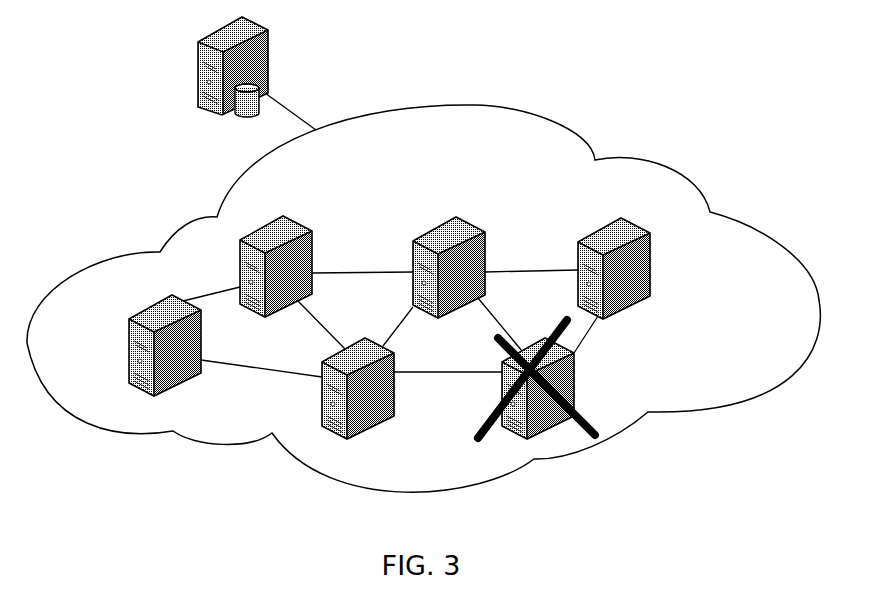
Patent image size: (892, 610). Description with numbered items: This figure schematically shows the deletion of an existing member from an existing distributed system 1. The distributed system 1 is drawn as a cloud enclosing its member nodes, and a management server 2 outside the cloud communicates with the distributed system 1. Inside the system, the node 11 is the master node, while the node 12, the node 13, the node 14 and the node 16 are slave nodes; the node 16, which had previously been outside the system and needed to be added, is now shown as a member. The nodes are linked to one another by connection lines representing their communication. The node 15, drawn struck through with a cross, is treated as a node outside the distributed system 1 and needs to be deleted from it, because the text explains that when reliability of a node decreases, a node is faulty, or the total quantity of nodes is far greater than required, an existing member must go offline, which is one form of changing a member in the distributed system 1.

The distributed system 1 is at (586, 142).
The management server 2 is at (270, 53).
The node 11 is at (287, 217).
The node 12 is at (458, 218).
The node 13 is at (634, 221).
The node 14 is at (320, 390).
The node 15 is at (577, 377).
The node 16 is at (153, 310).